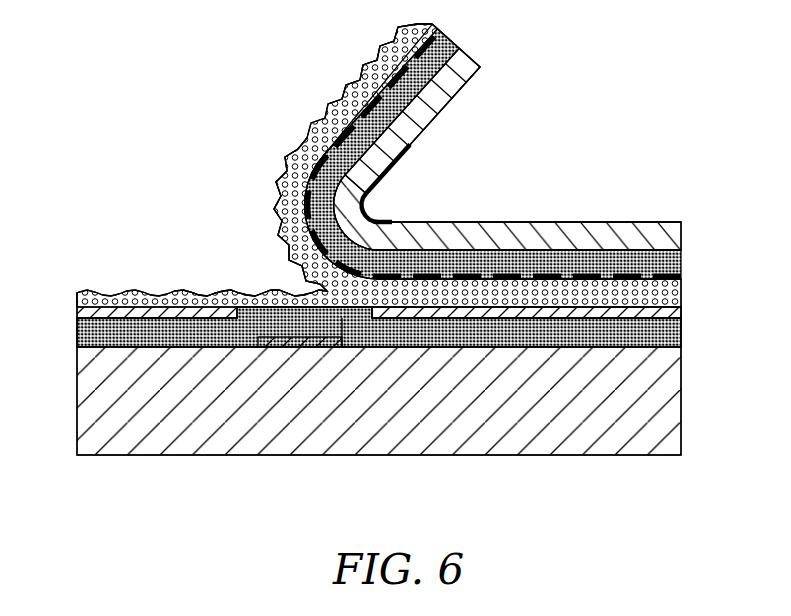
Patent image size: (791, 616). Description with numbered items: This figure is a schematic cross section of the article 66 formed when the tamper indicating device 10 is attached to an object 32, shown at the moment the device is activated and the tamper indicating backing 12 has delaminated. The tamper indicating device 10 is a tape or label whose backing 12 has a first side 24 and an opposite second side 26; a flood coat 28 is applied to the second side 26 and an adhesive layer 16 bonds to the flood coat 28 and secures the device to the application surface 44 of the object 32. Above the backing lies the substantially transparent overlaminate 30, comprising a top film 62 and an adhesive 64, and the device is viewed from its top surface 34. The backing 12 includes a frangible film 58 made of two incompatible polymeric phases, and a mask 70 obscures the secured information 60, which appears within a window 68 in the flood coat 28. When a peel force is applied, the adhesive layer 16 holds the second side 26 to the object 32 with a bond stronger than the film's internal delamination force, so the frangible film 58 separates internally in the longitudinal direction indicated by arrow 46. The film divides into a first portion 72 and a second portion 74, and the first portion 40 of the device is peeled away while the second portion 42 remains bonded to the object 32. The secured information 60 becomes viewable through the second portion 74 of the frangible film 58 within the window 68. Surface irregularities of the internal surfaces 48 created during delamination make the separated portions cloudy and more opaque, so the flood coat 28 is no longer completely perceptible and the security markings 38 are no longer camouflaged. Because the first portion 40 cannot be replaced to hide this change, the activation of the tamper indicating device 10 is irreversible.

The tamper indicating device 10 is at (480, 209).
The tamper indicating backing 12 is at (607, 300).
The adhesive layer 16 is at (555, 337).
The first side 24 is at (660, 277).
The second side 26 is at (645, 309).
The flood coat 28 is at (443, 312).
The overlaminate 30 is at (697, 249).
The object 32 is at (234, 411).
The top surface 34 is at (690, 222).
The security markings 38 is at (285, 188).
The first portion 40 is at (453, 41).
The second portion 42 is at (68, 347).
The application surface 44 is at (148, 333).
The arrow 46 is at (260, 278).
The internal surfaces 48 is at (188, 290).
The frangible film 58 is at (562, 297).
The secured information 60 is at (280, 348).
The top film 62 is at (497, 233).
The adhesive 64 is at (342, 112).
The article 66 is at (156, 155).
The window 68 is at (340, 318).
The mask 70 is at (401, 170).
The first portion of frangible film 72 is at (367, 83).
The second portion of frangible film 74 is at (147, 293).